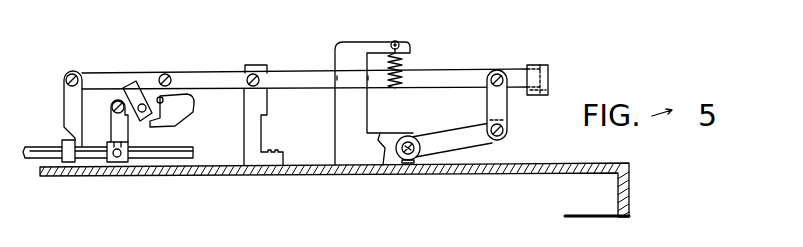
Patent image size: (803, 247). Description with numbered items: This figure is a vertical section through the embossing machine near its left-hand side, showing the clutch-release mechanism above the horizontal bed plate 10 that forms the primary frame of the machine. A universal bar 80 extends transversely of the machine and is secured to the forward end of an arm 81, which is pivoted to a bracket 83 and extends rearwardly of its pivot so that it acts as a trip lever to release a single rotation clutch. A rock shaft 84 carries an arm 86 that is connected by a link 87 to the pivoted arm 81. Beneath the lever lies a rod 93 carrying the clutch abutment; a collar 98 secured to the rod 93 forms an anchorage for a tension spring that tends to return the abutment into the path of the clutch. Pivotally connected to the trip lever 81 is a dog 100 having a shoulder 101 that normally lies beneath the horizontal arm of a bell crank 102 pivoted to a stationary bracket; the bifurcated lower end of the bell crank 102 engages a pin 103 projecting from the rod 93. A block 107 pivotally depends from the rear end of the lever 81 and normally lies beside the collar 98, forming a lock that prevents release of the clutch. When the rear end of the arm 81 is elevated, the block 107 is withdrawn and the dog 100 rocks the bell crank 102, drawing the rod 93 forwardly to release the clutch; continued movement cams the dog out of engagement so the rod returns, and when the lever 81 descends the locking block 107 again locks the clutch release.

The bed plate 10 is at (273, 170).
The universal bar 80 is at (542, 95).
The arm 81 is at (462, 77).
The bracket 83 is at (260, 103).
The rock shaft 84 is at (415, 162).
The arm 86 is at (445, 136).
The link 87 is at (490, 103).
The rod 93 is at (182, 157).
The collar 98 is at (70, 161).
The dog 100 is at (177, 105).
The shoulder 101 is at (142, 122).
The bell crank 102 is at (111, 130).
The pin 103 is at (117, 160).
The block 107 is at (70, 112).